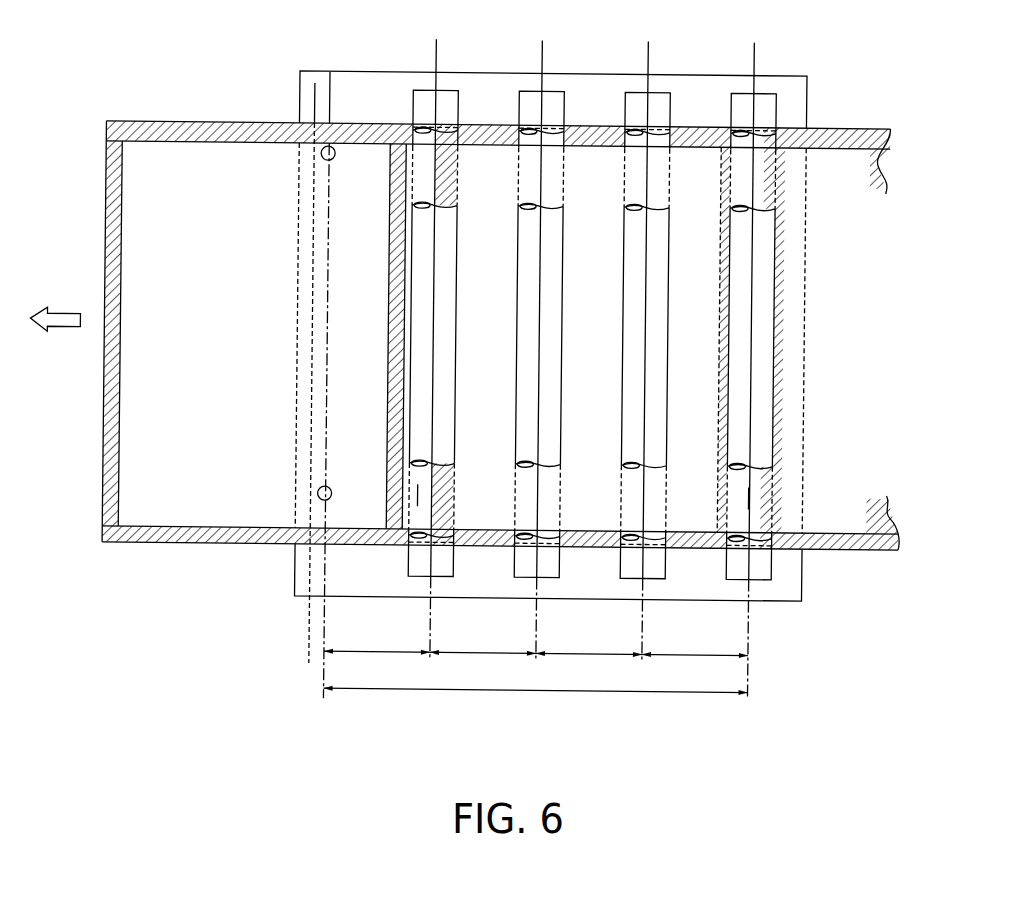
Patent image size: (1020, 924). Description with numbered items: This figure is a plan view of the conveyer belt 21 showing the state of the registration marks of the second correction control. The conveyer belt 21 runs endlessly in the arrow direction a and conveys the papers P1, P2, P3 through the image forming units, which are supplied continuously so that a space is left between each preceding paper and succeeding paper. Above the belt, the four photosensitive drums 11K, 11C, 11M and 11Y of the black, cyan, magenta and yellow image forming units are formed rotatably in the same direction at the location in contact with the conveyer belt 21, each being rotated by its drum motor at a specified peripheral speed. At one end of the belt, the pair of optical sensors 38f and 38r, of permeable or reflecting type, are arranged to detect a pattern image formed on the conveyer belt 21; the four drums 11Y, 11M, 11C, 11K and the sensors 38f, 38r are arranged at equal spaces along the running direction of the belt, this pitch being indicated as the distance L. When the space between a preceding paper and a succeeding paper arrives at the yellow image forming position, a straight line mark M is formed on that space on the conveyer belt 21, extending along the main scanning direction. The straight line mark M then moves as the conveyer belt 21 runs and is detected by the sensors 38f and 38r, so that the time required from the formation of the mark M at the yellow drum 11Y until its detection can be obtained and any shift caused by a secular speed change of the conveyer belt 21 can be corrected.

The conveyer belt 21 is at (349, 86).
The photosensitive drum (black) 11K is at (443, 91).
The photosensitive drum (cyan) 11C is at (552, 90).
The photosensitive drum (magenta) 11M is at (660, 92).
The photosensitive drum (yellow) 11Y is at (763, 91).
The sensor 38r is at (331, 162).
The sensor 38f is at (333, 490).
The paper P1 is at (237, 548).
The paper P2 is at (600, 547).
The paper P3 is at (850, 544).
The straight line mark M is at (751, 495).
The arrow direction a is at (43, 305).
The drum pitch L is at (536, 659).